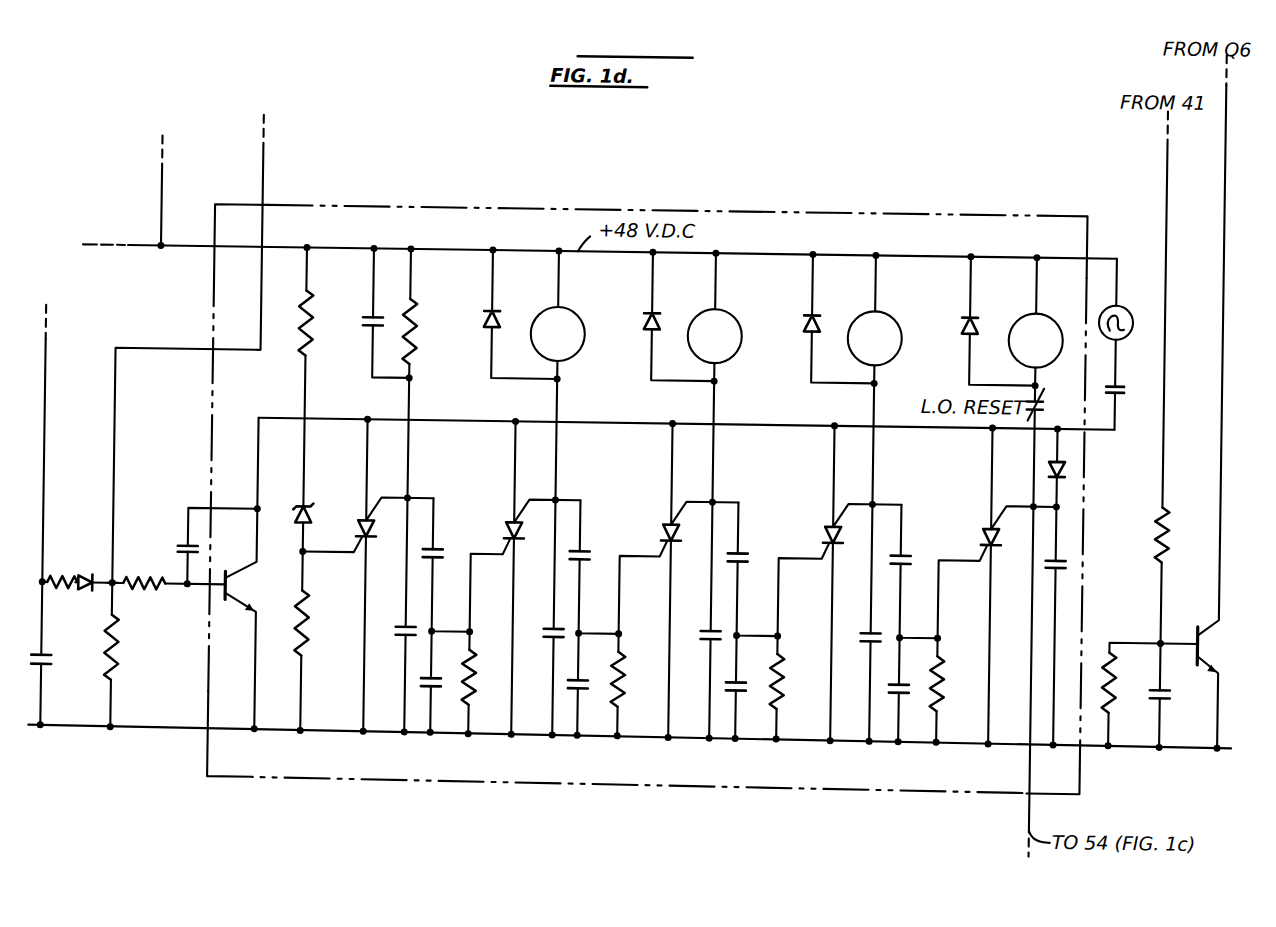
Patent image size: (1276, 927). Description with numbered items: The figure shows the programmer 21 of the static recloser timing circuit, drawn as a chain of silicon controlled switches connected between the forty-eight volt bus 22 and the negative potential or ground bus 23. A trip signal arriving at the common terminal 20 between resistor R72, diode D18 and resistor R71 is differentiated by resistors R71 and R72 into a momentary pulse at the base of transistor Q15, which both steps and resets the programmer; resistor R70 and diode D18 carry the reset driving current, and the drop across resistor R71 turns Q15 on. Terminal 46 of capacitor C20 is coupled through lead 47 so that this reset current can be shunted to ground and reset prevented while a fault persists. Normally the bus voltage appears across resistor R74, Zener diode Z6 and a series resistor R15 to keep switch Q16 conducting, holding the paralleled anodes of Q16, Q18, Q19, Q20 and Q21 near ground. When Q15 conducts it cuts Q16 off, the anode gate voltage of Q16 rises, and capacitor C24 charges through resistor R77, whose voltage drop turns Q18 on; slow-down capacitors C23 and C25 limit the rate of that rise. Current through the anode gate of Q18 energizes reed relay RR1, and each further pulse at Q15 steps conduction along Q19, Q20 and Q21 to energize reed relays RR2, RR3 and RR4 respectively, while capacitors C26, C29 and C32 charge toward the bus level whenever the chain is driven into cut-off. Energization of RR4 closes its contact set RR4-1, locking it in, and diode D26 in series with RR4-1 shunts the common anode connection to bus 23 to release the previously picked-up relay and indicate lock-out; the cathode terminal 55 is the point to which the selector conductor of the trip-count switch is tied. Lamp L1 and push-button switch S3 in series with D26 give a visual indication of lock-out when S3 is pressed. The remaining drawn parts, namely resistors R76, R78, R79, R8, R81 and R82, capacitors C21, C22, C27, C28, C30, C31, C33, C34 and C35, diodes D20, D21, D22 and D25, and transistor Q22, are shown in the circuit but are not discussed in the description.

The common terminal 20 is at (118, 588).
The programmer 21 is at (670, 190).
The 48 volt D.C. bus 22 is at (738, 244).
The negative potential bus 23 is at (800, 736).
The terminal of capacitor C20 46 is at (48, 580).
The lead 47 is at (47, 472).
The cathode terminal 55 is at (1061, 503).
The resistor R70 is at (60, 590).
The resistor R71 is at (118, 655).
The resistor R72 is at (152, 590).
The resistor R74 is at (300, 350).
The resistor R76 is at (418, 330).
The resistor R77 is at (479, 672).
The resistor R78 is at (626, 695).
The resistor R79 is at (787, 688).
The resistor R8 is at (947, 688).
The resistor R15 is at (312, 620).
The resistor R81 is at (1121, 698).
The resistor R82 is at (1160, 521).
The capacitor C20 is at (57, 662).
The capacitor C21 is at (181, 548).
The capacitor C22 is at (363, 316).
The slow-down capacitor C23 is at (400, 630).
The capacitor C24 is at (440, 553).
The slow-down capacitor C25 is at (438, 690).
The capacitor C26 is at (596, 550).
The capacitor C27 is at (549, 626).
The capacitor C28 is at (582, 680).
The capacitor C29 is at (755, 553).
The capacitor C30 is at (707, 636).
The capacitor C31 is at (750, 686).
The capacitor C32 is at (912, 566).
The capacitor C33 is at (866, 640).
The capacitor C34 is at (913, 682).
The capacitor C35 is at (1177, 680).
The diode D18 is at (92, 572).
The diode D20 is at (484, 314).
The diode D21 is at (644, 314).
The diode D22 is at (804, 314).
The diode D25 is at (962, 314).
The diode D26 is at (1069, 457).
The Zener diode Z6 is at (316, 513).
The transistor Q15 is at (252, 574).
The silicon controlled switch Q16 is at (367, 575).
The silicon controlled switch Q18 is at (541, 578).
The silicon controlled switch Q19 is at (698, 581).
The silicon controlled switch Q20 is at (861, 583).
The silicon controlled switch Q21 is at (1018, 586).
The transistor Q22 is at (1210, 638).
The reed relay RR1 is at (556, 438).
The reed relay RR2 is at (713, 440).
The reed relay RR3 is at (873, 443).
The reed relay RR4 is at (1033, 555).
The contact set RR4-1 is at (1070, 557).
The lamp L1 is at (1128, 301).
The switch S3 is at (1130, 409).